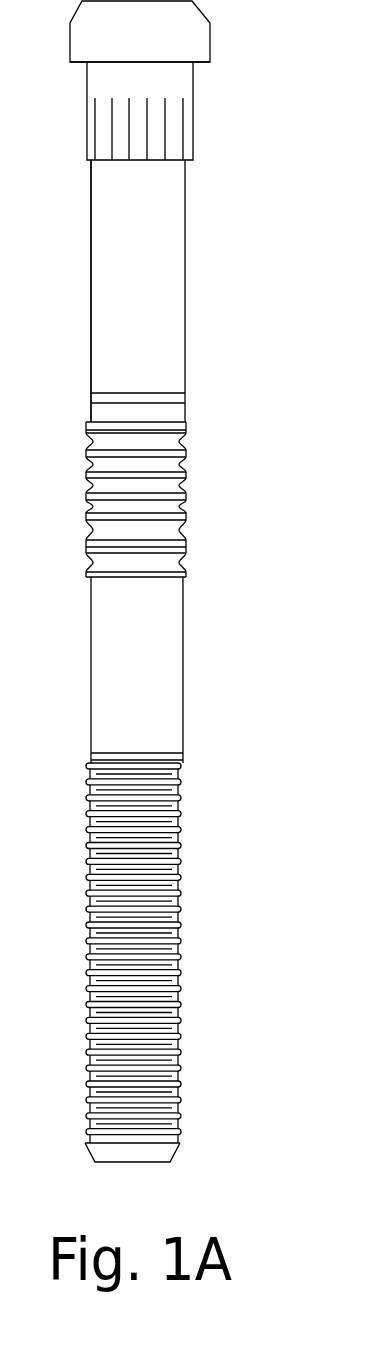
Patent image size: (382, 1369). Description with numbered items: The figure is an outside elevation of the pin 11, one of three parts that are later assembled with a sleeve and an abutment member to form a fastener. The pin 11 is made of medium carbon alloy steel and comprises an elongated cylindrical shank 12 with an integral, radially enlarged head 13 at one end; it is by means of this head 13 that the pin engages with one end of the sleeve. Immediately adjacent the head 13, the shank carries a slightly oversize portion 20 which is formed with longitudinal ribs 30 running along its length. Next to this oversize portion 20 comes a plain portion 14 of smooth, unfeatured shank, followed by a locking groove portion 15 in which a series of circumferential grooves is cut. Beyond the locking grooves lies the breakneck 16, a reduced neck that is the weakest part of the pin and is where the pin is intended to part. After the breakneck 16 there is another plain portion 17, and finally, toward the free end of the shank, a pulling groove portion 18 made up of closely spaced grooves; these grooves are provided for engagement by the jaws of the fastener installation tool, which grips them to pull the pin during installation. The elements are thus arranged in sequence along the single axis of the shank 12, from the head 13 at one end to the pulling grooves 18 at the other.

The pin 11 is at (185, 384).
The shank 12 is at (184, 687).
The head 13 is at (192, 39).
The plain portion 14 is at (185, 340).
The locking groove portion 15 is at (178, 508).
The breakneck 16 is at (177, 560).
The plain portion 17 is at (160, 733).
The pulling groove portion 18 is at (182, 903).
The oversize portion 20 is at (193, 78).
The longitudinal ribs 30 is at (165, 143).